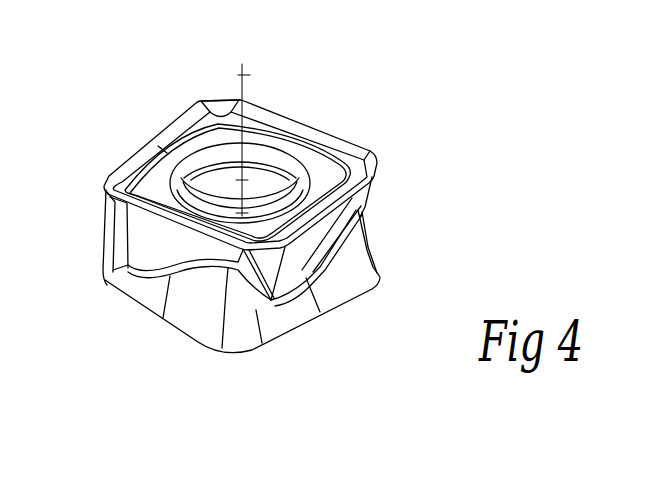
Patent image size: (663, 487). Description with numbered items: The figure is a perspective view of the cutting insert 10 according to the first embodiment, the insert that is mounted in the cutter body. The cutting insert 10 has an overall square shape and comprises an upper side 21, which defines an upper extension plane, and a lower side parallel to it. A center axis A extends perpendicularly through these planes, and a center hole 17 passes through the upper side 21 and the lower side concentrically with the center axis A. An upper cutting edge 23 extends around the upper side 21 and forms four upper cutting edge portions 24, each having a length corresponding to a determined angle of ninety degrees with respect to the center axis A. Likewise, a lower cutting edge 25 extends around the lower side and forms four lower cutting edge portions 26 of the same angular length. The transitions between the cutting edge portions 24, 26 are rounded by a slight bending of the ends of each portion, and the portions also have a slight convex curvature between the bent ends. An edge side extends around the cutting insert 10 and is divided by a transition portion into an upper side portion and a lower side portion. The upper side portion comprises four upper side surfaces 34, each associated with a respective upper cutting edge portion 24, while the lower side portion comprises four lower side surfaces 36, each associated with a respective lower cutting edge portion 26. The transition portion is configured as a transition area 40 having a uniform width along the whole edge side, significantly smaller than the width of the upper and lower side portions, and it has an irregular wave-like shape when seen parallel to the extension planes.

The cutting insert 10 is at (412, 136).
The center hole 17 is at (203, 177).
The upper side 21 is at (319, 168).
The upper cutting edge 23 is at (217, 99).
The upper cutting edge portions 24 is at (267, 105).
The lower cutting edge 25 is at (356, 296).
The lower cutting edge portions 26 is at (140, 302).
The upper side surfaces 34 is at (148, 243).
The lower side surfaces 36 is at (208, 313).
The transition area 40 is at (197, 266).
The center axis A is at (240, 78).